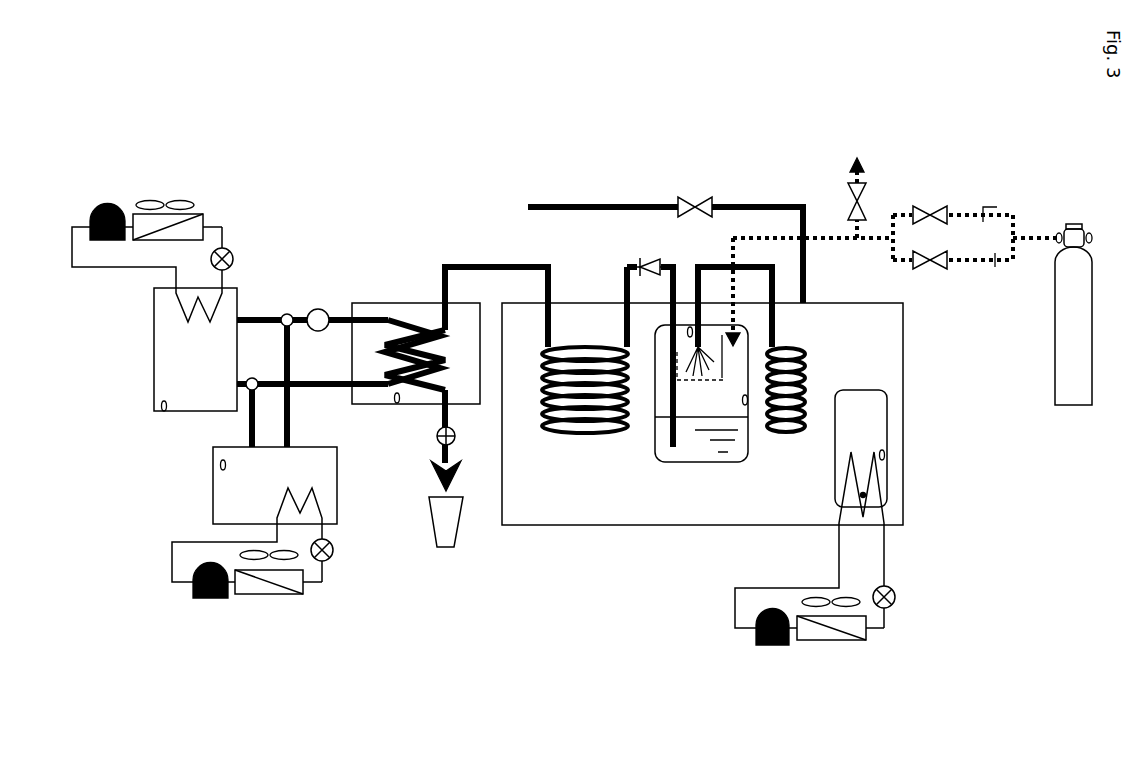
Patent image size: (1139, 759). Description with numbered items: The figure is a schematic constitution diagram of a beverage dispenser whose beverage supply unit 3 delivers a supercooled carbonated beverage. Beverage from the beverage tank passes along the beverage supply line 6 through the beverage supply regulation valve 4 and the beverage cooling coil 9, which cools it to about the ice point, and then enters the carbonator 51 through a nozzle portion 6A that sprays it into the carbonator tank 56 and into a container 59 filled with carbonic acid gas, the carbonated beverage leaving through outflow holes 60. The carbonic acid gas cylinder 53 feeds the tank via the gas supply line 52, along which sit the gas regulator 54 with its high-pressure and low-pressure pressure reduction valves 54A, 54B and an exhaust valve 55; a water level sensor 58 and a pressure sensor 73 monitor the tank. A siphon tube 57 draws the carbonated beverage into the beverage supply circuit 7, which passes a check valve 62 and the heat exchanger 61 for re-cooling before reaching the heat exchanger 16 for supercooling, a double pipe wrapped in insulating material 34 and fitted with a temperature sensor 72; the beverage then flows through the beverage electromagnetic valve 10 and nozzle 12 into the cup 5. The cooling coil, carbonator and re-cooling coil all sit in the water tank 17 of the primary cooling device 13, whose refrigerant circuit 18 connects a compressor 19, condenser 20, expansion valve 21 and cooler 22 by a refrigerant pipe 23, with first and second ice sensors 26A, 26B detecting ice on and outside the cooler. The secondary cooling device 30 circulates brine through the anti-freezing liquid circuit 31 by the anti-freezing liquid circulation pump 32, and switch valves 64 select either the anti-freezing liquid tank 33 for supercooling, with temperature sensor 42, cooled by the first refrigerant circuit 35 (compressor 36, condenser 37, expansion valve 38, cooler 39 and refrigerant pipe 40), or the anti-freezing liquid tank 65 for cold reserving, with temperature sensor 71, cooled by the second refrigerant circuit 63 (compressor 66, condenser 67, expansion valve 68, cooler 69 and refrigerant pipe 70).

The beverage supply unit 3 is at (771, 178).
The beverage supply regulation valve 4 is at (688, 197).
The cup 5 is at (443, 548).
The beverage supply line 6 is at (623, 205).
The nozzle portion 6A is at (712, 358).
The beverage supply circuit 7 is at (510, 265).
The beverage cooling coil 9 is at (790, 438).
The beverage electromagnetic valve 10 is at (437, 436).
The nozzle 12 is at (440, 480).
The primary cooling device 13 is at (936, 590).
The heat exchanger for supercooling 16 is at (398, 300).
The water tank 17 is at (905, 368).
The refrigerant circuit 18 is at (887, 553).
The compressor 19 is at (772, 647).
The condenser 20 is at (828, 642).
The expansion valve 21 is at (896, 600).
The cooler 22 is at (838, 500).
The refrigerant pipe 23 is at (735, 618).
The first ice sensor 26A is at (866, 495).
The second ice sensor 26B is at (886, 455).
The secondary cooling device 30 is at (118, 494).
The anti-freezing liquid circuit 31 is at (258, 315).
The anti-freezing liquid circulation pump 32 is at (318, 308).
The anti-freezing liquid tank for supercooling 33 is at (154, 366).
The insulating material 34 is at (425, 302).
The first refrigerant circuit 35 is at (213, 216).
The compressor 36 is at (105, 202).
The condenser 37 is at (150, 214).
The expansion valve 38 is at (223, 248).
The cooler 39 is at (178, 300).
The refrigerant pipe 40 is at (104, 268).
The temperature sensor 42 is at (160, 406).
The carbonator 51 is at (720, 465).
The gas supply line 52 is at (825, 237).
The carbonic acid gas cylinder 53 is at (1075, 405).
The gas regulator 54 is at (1036, 195).
The pressure reduction valve 54A is at (912, 210).
The pressure reduction valve 54B is at (912, 262).
The exhaust valve 55 is at (848, 192).
The carbonator tank 56 is at (656, 460).
The siphon tube 57 is at (632, 438).
The water level sensor 58 is at (742, 428).
The container 59 is at (743, 401).
The outflow holes 60 is at (697, 440).
The heat exchanger for re-cooling 61 is at (583, 345).
The check valve 62 is at (648, 260).
The second refrigerant circuit 63 is at (323, 606).
The switch valves 64 is at (287, 313).
The anti-freezing liquid tank for cold reserving 65 is at (213, 493).
The compressor 66 is at (200, 600).
The condenser 67 is at (262, 596).
The expansion valve 68 is at (334, 552).
The cooler 69 is at (320, 510).
The refrigerant pipe 70 is at (172, 565).
The temperature sensor 71 is at (219, 465).
The temperature sensor 72 is at (393, 400).
The pressure sensor 73 is at (690, 328).